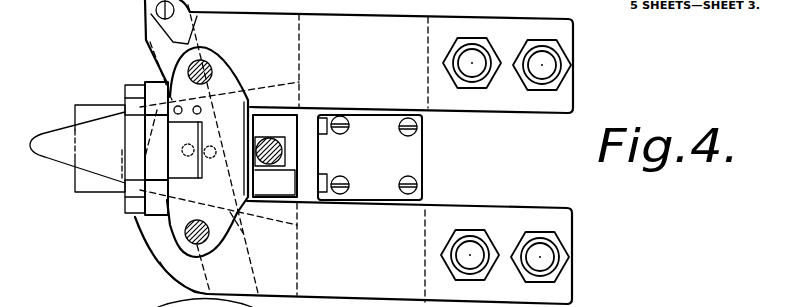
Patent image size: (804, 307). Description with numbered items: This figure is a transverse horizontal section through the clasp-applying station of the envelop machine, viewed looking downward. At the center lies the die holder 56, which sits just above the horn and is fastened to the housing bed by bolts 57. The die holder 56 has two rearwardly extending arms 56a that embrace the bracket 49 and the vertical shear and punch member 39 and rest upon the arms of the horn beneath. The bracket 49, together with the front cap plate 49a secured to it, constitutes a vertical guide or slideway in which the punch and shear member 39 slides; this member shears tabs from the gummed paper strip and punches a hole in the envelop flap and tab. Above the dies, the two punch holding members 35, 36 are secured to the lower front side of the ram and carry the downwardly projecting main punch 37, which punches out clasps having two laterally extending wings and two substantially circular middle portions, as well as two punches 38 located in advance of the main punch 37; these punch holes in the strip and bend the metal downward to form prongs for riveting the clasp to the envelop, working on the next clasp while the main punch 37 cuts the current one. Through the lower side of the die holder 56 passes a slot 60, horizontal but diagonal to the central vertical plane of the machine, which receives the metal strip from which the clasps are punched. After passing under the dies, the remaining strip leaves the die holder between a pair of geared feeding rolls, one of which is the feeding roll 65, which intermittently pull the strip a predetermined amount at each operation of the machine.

The punch holding member 35 is at (143, 214).
The punch holding member 36 is at (203, 170).
The main punch 37 is at (187, 153).
The punch 38 is at (196, 114).
The shear and punch member 39 is at (280, 134).
The bracket 49 is at (370, 157).
The front cap plate 49a is at (275, 182).
The die holder 56 is at (148, 247).
The rearwardly extending arms 56a is at (356, 158).
The bolt 57 is at (562, 66).
The slot 60 is at (246, 238).
The feeding roll 65 is at (77, 148).